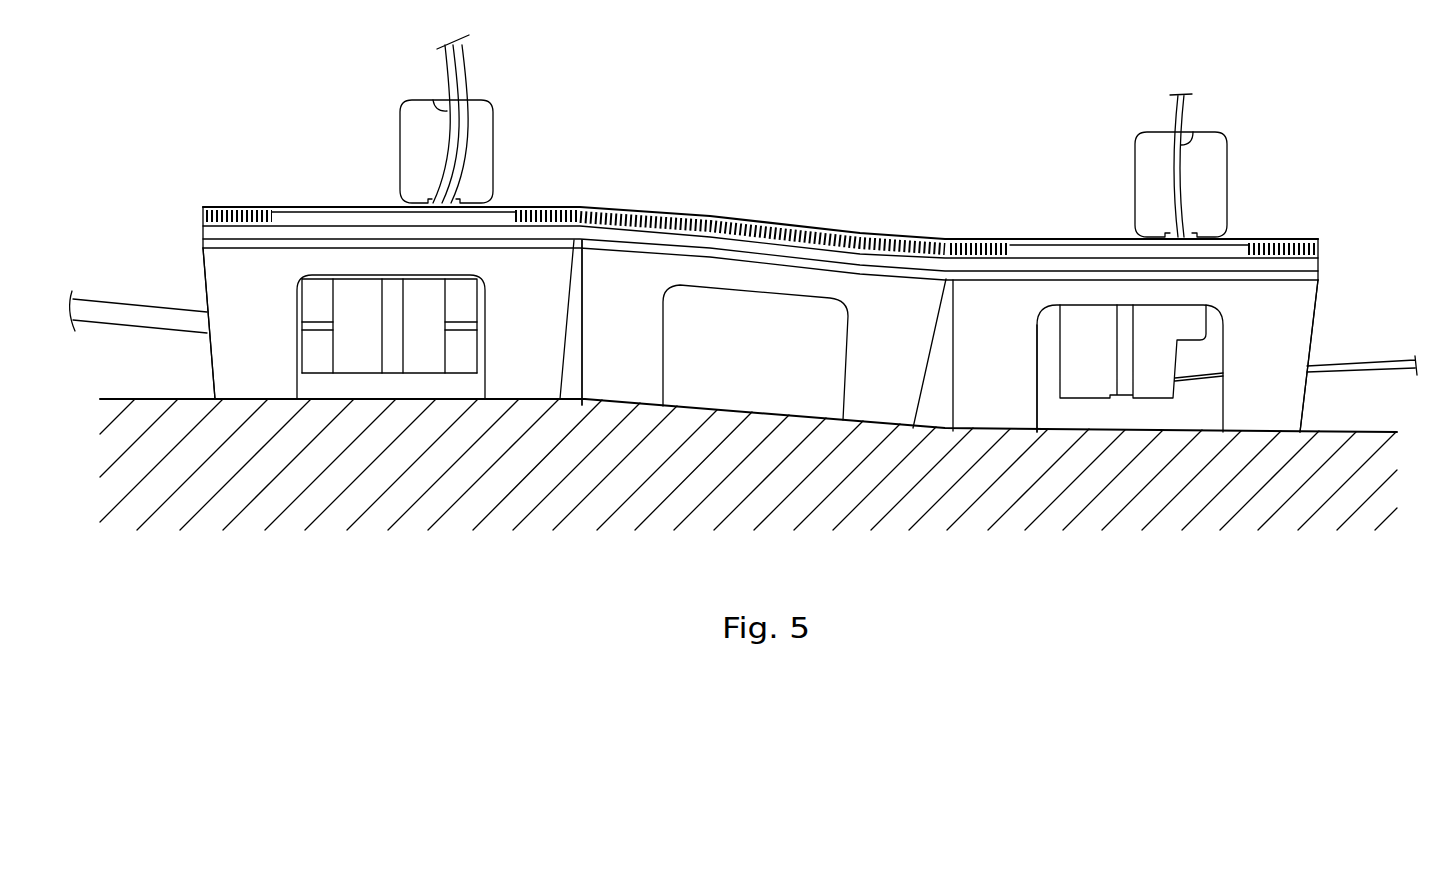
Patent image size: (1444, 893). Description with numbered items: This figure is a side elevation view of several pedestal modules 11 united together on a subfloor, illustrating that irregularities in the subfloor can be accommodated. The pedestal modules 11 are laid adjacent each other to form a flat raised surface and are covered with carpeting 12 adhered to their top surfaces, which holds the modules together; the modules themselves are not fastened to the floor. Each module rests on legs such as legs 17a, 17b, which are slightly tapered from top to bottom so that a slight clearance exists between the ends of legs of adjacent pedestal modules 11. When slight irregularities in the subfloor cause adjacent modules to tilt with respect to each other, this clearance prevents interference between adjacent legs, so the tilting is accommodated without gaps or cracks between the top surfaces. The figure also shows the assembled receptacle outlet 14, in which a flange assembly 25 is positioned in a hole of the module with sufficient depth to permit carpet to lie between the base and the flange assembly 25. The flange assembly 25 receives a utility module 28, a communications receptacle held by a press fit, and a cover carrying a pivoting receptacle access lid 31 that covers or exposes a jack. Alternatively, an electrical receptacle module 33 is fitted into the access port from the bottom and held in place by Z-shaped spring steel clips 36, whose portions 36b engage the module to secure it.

The pedestal module 11 is at (1321, 298).
The carpeting 12 is at (897, 240).
The receptacle outlet 14 is at (1288, 333).
The leg 17a is at (510, 365).
The leg 17b is at (250, 372).
The flange assembly 25 is at (289, 212).
The utility module 28 is at (1158, 388).
The receptacle access lid 31 is at (477, 146).
The electrical receptacle module 33 is at (417, 358).
The Z-shaped spring steel clip 36 is at (382, 328).
The window mullion 36b is at (392, 353).